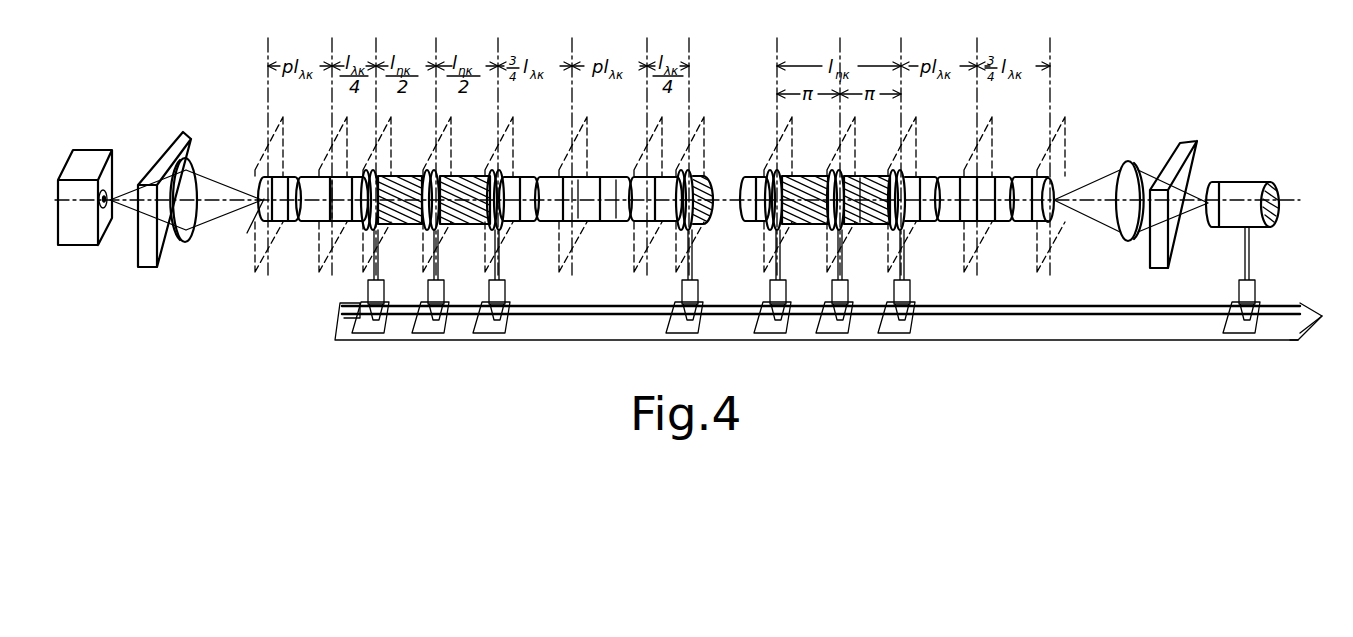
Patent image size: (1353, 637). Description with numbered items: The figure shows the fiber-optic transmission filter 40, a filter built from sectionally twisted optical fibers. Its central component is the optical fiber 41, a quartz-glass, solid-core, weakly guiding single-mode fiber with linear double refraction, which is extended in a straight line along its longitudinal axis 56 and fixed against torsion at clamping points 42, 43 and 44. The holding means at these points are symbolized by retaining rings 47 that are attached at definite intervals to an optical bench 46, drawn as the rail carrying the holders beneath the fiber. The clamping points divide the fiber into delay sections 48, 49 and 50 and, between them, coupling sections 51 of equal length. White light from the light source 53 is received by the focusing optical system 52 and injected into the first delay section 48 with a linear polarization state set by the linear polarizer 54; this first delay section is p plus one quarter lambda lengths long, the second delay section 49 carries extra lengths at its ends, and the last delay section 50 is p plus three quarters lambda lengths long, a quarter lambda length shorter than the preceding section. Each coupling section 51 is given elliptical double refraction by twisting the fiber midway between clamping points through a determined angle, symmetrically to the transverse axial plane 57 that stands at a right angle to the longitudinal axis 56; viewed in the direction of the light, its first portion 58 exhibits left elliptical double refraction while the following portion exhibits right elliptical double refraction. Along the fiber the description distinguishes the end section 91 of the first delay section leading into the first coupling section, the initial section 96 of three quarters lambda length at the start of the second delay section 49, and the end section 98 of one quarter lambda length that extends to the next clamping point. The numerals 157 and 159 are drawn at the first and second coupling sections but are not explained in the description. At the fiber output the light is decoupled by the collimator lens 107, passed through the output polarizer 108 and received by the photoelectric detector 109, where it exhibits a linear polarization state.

The fiber-optic transmission filter 40 is at (730, 151).
The optical fiber 41 is at (600, 232).
The clamping point 42 is at (383, 172).
The clamping point 43 is at (782, 172).
The clamping point 44 is at (912, 172).
The mounting rail 46 is at (1089, 310).
The retaining ring 47 is at (512, 238).
The first delay section 48 is at (290, 173).
The second delay section 49 is at (606, 172).
The last delay section 50 is at (923, 238).
The coupling section 51 is at (452, 240).
The focusing optical system 52 is at (181, 243).
The light source 53 is at (81, 164).
The linear polarizer 54 is at (160, 163).
The longitudinal axis 56 is at (737, 235).
The transverse axial plane 57 is at (850, 162).
The first portion of coupling section 58 is at (383, 237).
The end section 91 is at (348, 252).
The initial section 96 is at (527, 172).
The end section 98 is at (663, 235).
The collimator lens 107 is at (1115, 178).
The output polarizer 108 is at (1173, 162).
The photoelectric detector 109 is at (1242, 200).
The coil winding 157 is at (442, 168).
The coil winding 159 is at (851, 230).